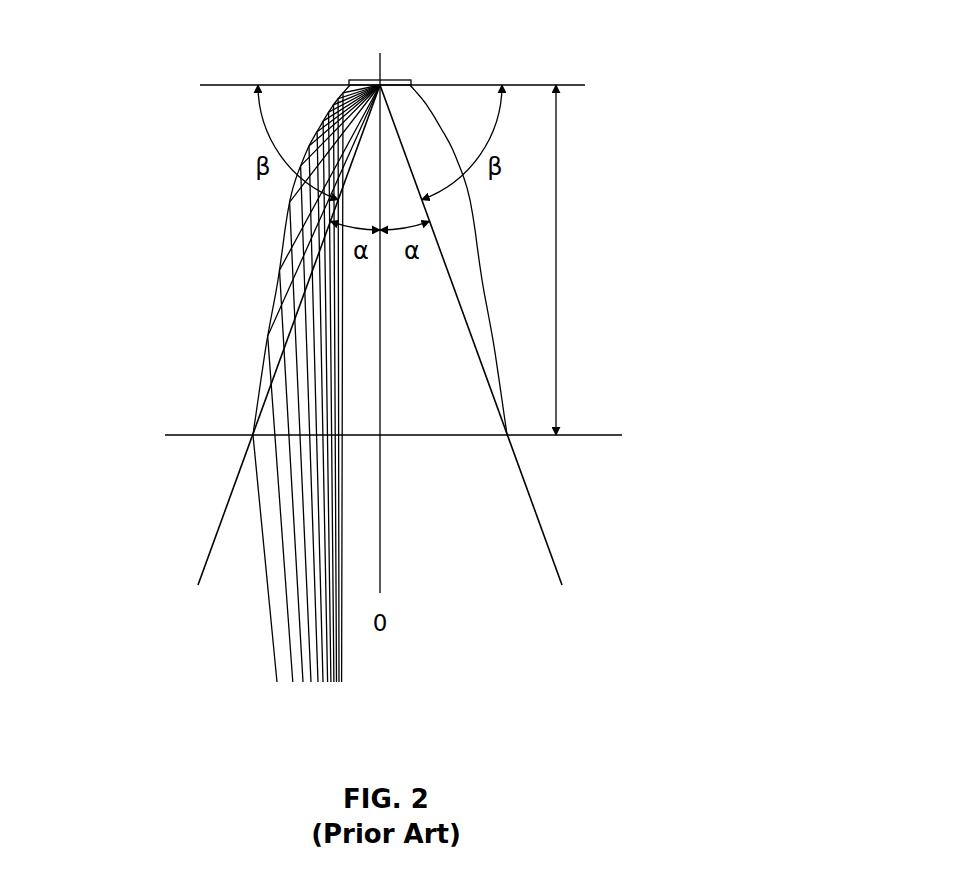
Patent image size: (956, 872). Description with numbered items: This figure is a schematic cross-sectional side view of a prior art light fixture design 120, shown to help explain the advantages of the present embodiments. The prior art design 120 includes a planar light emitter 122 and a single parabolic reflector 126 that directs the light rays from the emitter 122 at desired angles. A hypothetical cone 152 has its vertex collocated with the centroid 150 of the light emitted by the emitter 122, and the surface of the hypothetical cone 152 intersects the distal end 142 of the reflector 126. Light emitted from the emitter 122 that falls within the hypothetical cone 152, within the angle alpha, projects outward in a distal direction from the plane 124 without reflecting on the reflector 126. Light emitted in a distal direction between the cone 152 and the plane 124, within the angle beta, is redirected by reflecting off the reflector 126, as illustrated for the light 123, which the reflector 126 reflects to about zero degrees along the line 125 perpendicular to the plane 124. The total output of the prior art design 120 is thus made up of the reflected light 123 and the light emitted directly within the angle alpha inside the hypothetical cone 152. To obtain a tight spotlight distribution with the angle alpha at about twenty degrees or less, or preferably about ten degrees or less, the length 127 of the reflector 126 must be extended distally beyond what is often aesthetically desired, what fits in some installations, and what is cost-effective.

The prior art light fixture design 120 is at (653, 112).
The planar light emitter 122 is at (358, 80).
The light 123 is at (368, 672).
The plane 124 is at (538, 83).
The line 125 is at (382, 545).
The parabolic reflector 126 is at (280, 272).
The length 127 is at (557, 333).
The distal end 142 is at (253, 433).
The centroid 150 is at (381, 80).
The hypothetical cone 152 is at (222, 520).